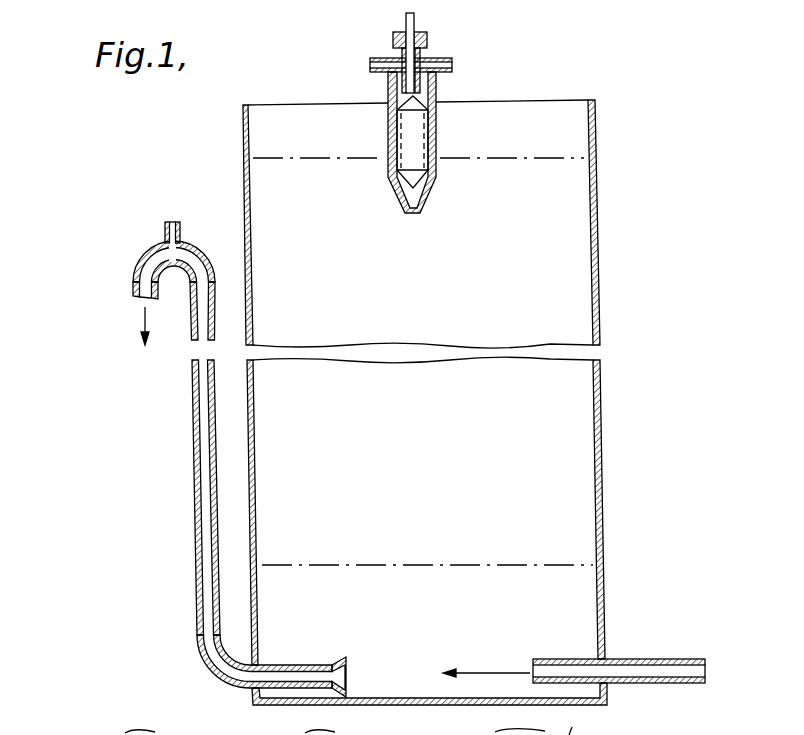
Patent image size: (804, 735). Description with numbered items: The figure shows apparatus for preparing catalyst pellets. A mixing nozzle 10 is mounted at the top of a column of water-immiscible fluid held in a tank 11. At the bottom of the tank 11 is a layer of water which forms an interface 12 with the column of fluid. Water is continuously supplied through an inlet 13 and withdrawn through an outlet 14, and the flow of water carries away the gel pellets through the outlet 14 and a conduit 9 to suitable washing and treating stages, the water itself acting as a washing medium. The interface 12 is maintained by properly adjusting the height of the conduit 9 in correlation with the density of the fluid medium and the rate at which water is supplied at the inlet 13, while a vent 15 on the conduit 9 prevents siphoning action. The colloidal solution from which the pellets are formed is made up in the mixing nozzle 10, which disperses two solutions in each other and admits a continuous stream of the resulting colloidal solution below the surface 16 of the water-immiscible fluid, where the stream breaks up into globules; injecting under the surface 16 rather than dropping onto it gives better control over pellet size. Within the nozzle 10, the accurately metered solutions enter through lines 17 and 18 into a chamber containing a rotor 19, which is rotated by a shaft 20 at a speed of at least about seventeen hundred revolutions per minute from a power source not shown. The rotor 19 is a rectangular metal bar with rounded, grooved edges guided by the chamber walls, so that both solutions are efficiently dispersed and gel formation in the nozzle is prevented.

The conduit 9 is at (157, 258).
The mixing nozzle 10 is at (448, 91).
The tank 11 is at (600, 236).
The interface 12 is at (575, 565).
The inlet 13 is at (706, 664).
The outlet 14 is at (347, 677).
The vent 15 is at (172, 222).
The surface 16 is at (565, 157).
The line 17 is at (453, 62).
The line 18 is at (369, 66).
The rotor 19 is at (414, 146).
The shaft 20 is at (418, 27).